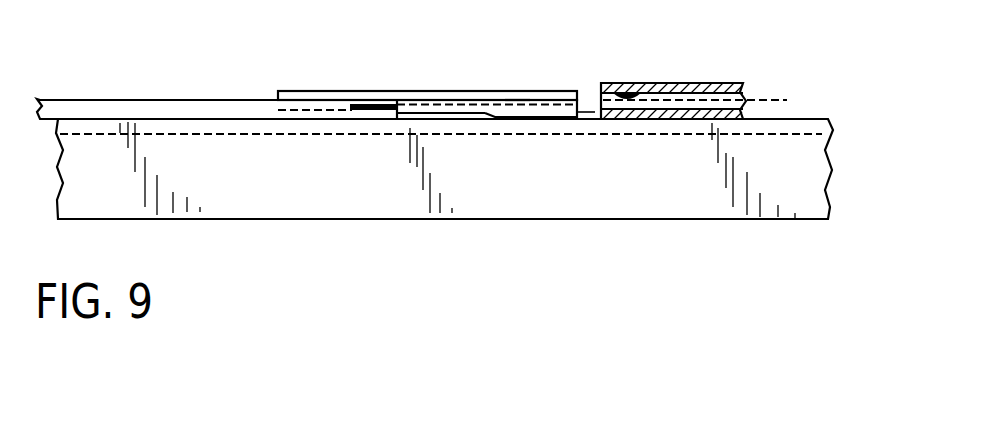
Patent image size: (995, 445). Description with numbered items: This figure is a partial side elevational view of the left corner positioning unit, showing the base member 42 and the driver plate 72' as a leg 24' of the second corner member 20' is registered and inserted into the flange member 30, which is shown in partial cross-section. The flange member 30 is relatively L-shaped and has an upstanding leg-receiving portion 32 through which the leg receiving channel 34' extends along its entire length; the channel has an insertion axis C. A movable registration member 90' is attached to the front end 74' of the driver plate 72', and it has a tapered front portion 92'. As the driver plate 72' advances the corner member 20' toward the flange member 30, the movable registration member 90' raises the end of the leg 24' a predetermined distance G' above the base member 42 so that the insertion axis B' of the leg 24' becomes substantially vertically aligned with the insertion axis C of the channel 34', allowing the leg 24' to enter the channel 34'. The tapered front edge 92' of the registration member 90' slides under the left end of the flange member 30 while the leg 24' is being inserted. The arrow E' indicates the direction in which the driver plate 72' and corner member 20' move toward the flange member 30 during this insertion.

The base member 42 is at (677, 194).
The driver plate 72' is at (307, 80).
The second corner member 20' is at (427, 67).
The leg 24' is at (427, 70).
The insertion axis B' is at (534, 61).
The front end 74' is at (355, 148).
The movable registration member 90' is at (453, 153).
The tapered front portion 92' is at (533, 153).
The predetermined distance G' is at (610, 97).
The flange member 30 is at (726, 71).
The upstanding leg-receiving portion 32 is at (685, 68).
The leg receiving channel 34' is at (656, 59).
The insertion axis of the channel C is at (762, 100).
The direction arrow E' is at (167, 26).